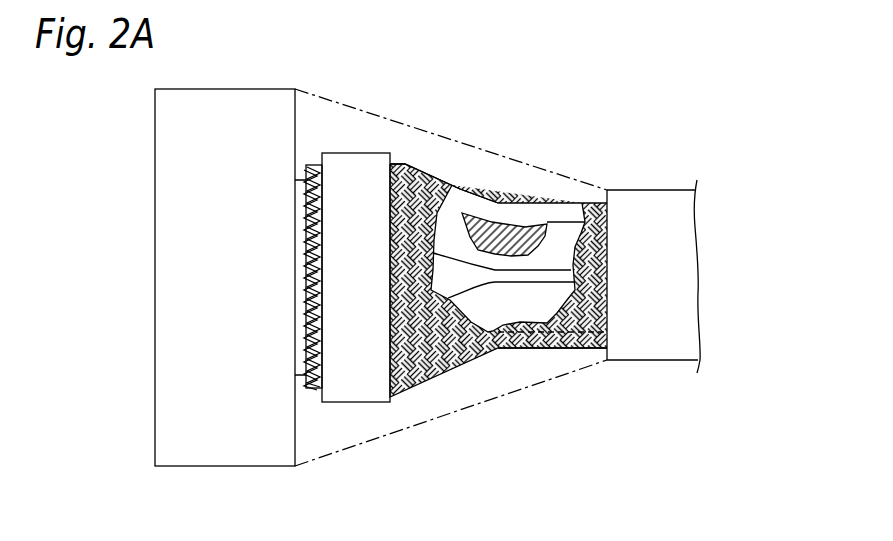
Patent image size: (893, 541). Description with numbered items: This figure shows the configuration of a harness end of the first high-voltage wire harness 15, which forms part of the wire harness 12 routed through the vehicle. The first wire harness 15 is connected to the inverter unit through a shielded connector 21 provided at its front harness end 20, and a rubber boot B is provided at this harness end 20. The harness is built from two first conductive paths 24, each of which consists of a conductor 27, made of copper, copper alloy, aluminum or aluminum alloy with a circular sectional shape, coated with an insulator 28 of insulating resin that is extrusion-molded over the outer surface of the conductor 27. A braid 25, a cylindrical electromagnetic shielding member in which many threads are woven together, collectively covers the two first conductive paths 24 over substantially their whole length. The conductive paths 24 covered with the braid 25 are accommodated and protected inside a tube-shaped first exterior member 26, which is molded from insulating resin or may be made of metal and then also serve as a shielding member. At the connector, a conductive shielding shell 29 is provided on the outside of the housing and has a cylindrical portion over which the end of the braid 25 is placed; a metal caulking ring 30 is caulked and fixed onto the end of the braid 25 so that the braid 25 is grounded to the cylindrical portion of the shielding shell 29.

The wire harness 12 is at (711, 99).
The first wire harness 15 is at (646, 99).
The front harness end 20 is at (423, 89).
The shielded connector 21 is at (319, 127).
The first conductive path 24 is at (498, 258).
The braid 25 is at (428, 352).
The first exterior member 26 is at (675, 257).
The conductor 27 is at (486, 216).
The insulator 28 is at (561, 232).
The shielding shell 29 is at (224, 443).
The caulking ring 30 is at (357, 392).
The rubber boot B is at (528, 388).